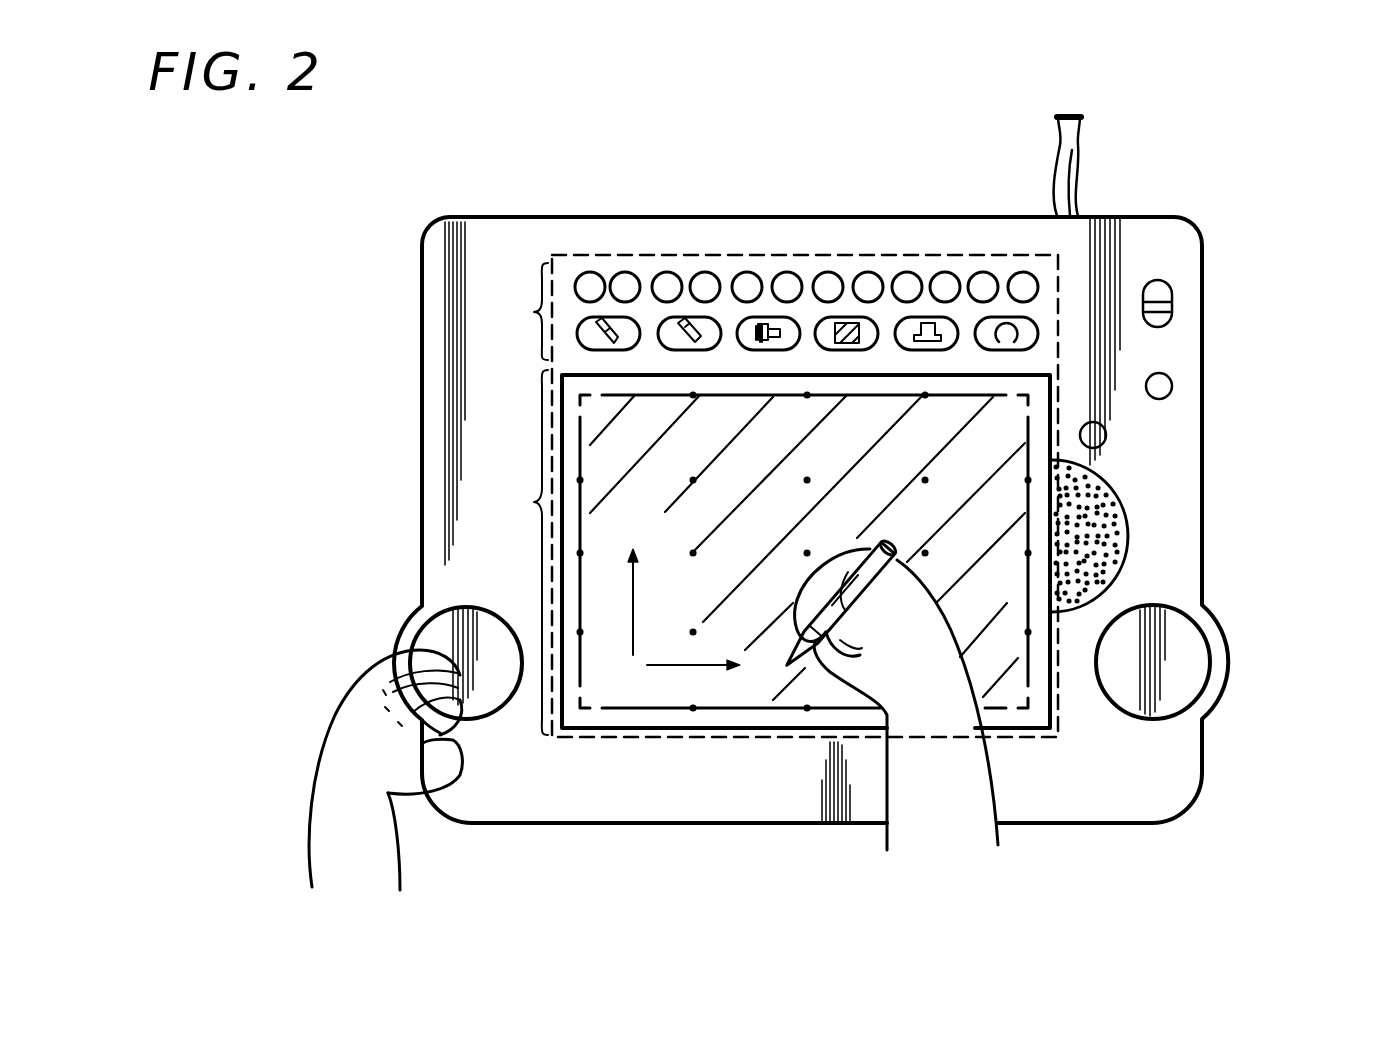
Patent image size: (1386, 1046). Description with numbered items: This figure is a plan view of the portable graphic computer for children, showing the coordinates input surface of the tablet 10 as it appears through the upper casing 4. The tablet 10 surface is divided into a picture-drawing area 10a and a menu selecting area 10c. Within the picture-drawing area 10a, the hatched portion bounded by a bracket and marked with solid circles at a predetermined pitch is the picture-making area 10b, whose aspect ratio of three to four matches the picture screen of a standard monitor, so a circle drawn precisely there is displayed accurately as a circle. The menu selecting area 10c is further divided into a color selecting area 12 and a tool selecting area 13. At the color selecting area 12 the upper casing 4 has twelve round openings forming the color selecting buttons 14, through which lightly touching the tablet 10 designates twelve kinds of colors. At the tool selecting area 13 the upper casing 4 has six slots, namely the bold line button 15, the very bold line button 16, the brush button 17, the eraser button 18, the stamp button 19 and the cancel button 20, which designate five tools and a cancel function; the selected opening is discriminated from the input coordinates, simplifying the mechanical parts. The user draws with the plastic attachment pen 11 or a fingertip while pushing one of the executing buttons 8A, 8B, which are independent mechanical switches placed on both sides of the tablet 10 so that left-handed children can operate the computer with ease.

The tablet 10 is at (552, 255).
The picture-drawing area 10a is at (760, 633).
The picture-making area 10b is at (767, 707).
The menu selecting area 10c is at (878, 253).
The upper casing 4 is at (1182, 302).
The executing button 8A is at (482, 722).
The executing button 8B is at (1180, 662).
The attachment pen 11 is at (907, 565).
The color selecting area 12 is at (930, 217).
The tool selecting area 13 is at (927, 253).
The color selecting buttons 14 is at (1040, 286).
The bold line button 15 is at (607, 317).
The very bold line button 16 is at (688, 317).
The brush button 17 is at (768, 317).
The eraser button 18 is at (847, 317).
The stamp button 19 is at (925, 317).
The cancel button 20 is at (1038, 336).